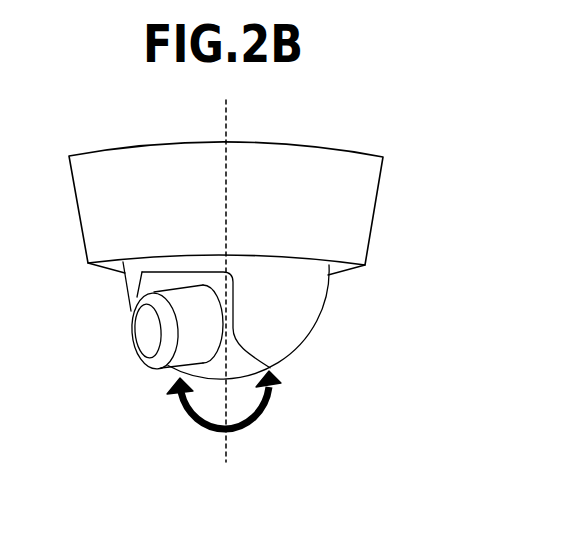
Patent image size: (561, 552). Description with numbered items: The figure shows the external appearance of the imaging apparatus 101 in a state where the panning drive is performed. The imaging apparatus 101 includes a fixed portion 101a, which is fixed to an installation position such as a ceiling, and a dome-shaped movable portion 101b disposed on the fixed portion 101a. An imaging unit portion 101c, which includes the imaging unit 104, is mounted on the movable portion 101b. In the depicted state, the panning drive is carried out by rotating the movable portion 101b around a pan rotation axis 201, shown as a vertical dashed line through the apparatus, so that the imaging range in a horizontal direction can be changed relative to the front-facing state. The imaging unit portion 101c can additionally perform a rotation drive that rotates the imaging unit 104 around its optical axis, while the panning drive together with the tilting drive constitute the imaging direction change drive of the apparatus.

The pan rotation axis 201 is at (225, 110).
The imaging apparatus 101 is at (255, 268).
The fixed portion 101a is at (363, 218).
The movable portion 101b is at (315, 300).
The imaging unit portion 101c is at (190, 352).
The imaging unit 104 is at (129, 337).